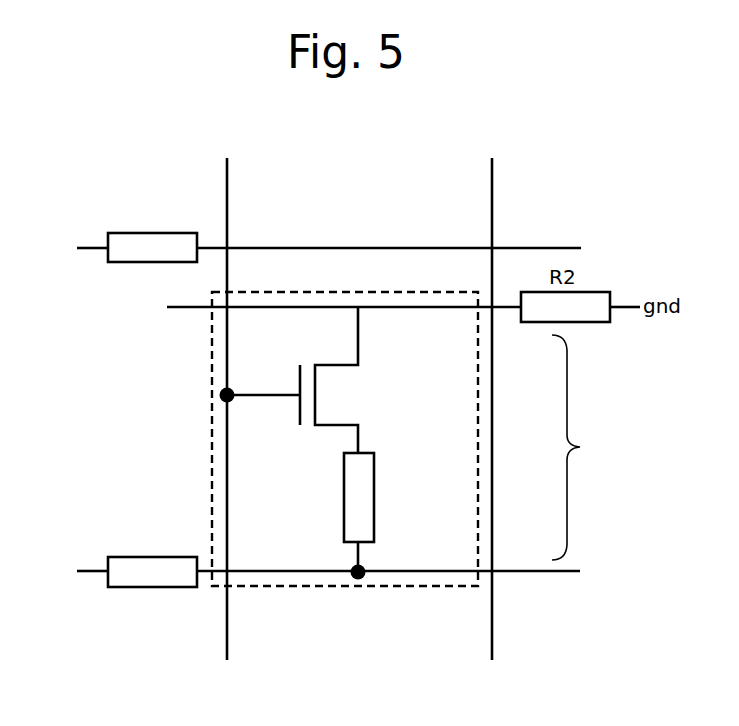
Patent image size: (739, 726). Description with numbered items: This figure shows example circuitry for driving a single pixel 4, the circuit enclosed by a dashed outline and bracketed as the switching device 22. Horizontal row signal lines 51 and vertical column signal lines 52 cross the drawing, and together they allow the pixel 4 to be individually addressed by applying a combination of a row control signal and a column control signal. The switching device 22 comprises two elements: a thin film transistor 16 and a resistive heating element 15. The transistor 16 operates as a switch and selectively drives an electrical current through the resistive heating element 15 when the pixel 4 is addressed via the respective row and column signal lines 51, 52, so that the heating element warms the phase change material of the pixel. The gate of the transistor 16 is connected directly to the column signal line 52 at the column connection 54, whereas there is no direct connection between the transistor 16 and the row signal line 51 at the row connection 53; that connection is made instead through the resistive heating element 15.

The pixel 4 is at (479, 437).
The resistive heating element 15 is at (360, 496).
The thin film transistor 16 is at (373, 403).
The switching device 22 is at (613, 461).
The row signal line 51 is at (273, 570).
The column signal line 52 is at (226, 635).
The row connection 53 is at (358, 580).
The column connection 54 is at (221, 394).